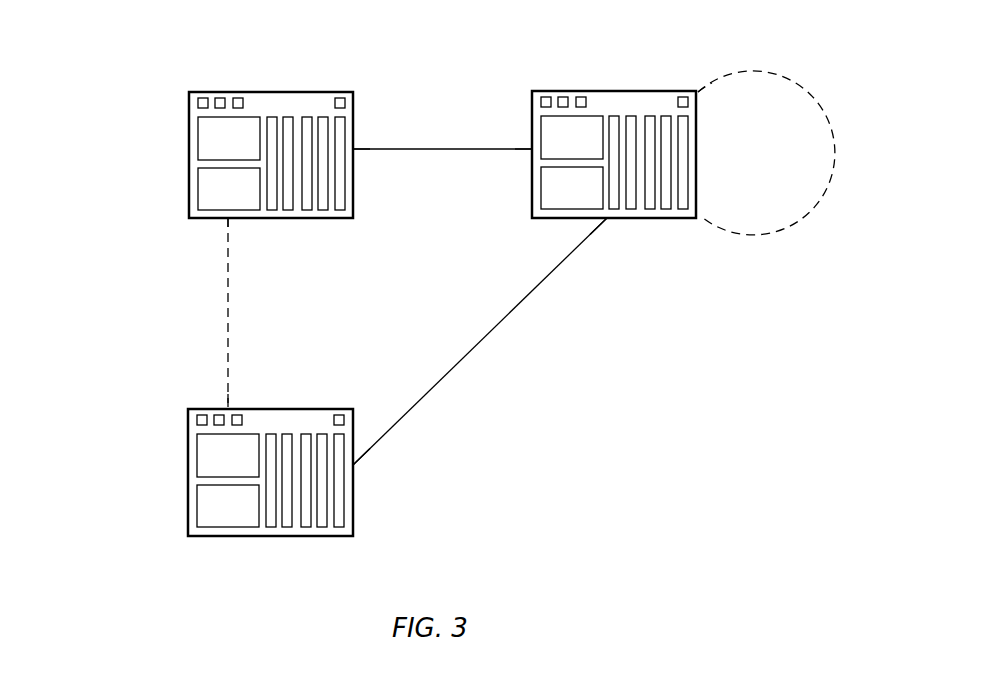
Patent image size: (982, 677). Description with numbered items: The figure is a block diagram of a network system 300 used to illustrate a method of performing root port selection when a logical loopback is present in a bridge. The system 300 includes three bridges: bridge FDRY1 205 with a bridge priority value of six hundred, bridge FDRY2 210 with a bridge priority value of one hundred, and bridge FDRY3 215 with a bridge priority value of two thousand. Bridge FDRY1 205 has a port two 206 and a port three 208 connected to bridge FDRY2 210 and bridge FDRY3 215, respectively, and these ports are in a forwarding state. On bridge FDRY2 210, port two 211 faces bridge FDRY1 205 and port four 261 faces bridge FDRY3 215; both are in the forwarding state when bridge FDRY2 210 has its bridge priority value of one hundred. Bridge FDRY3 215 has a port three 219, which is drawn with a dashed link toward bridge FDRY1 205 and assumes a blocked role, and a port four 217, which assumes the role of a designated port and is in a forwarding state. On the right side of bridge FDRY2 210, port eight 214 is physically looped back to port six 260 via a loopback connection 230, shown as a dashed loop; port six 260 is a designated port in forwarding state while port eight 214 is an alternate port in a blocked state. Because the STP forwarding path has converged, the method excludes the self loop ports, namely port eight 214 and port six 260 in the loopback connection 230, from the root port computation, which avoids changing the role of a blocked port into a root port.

The network system 300 is at (102, 68).
The bridge FDRY1 205 is at (189, 154).
The port 2 of bridge FDRY1 206 is at (355, 152).
The port 3 of bridge FDRY1 208 is at (222, 218).
The bridge FDRY2 210 is at (531, 100).
The port 2 of bridge FDRY2 211 is at (528, 152).
The port 6 of bridge FDRY2 260 is at (697, 100).
The port 8 of bridge FDRY2 214 is at (697, 210).
The port 4 of bridge FDRY2 261 is at (606, 220).
The loopback connection 230 is at (837, 153).
The bridge FDRY3 215 is at (188, 466).
The port 3 of bridge FDRY3 219 is at (227, 409).
The port 4 of bridge FDRY3 217 is at (355, 468).